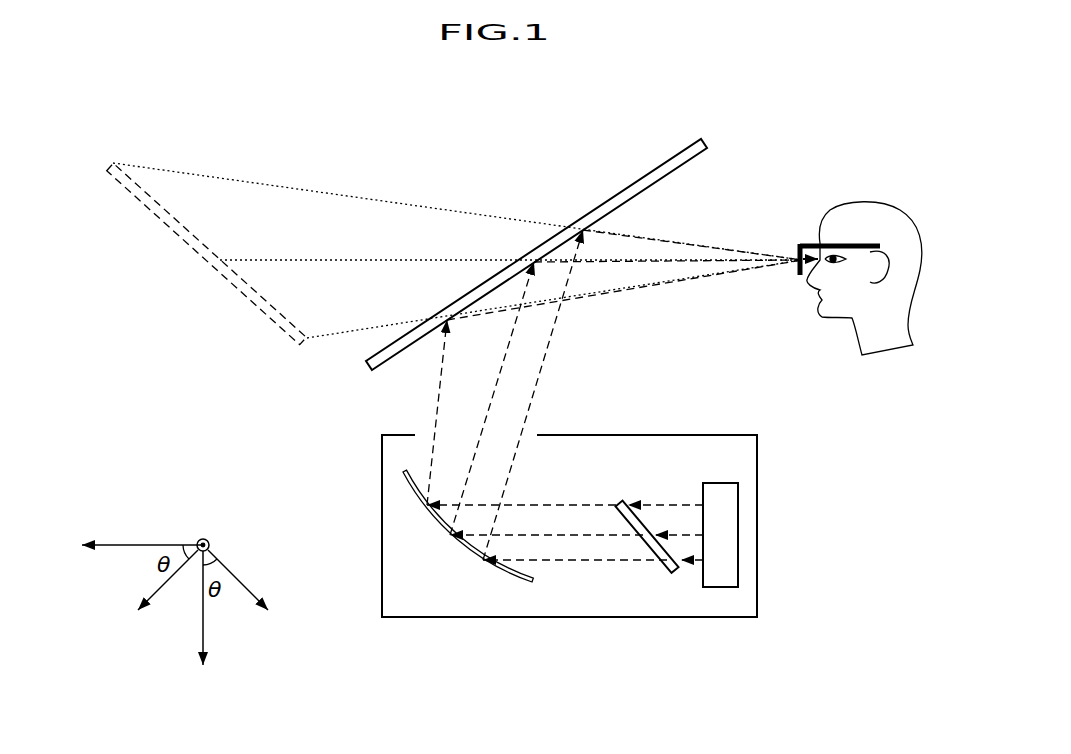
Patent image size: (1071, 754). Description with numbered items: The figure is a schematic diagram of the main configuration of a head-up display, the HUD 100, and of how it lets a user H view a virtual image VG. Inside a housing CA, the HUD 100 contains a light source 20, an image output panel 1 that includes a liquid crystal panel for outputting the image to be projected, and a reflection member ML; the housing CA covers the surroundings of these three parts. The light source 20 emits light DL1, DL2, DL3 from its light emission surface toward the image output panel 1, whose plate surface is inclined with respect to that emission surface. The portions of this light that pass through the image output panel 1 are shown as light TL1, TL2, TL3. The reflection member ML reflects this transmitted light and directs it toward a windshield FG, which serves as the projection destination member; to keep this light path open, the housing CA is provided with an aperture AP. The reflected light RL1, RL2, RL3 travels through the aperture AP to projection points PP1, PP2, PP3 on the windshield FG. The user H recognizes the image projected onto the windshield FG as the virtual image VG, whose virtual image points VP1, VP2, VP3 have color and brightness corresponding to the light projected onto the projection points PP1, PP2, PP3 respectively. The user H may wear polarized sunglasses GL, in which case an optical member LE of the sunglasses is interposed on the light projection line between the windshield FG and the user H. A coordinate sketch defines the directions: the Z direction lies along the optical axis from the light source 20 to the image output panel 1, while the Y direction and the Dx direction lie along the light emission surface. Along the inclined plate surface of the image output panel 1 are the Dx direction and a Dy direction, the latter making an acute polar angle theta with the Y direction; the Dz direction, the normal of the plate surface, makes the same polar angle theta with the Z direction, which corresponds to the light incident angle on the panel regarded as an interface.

The virtual image VG is at (142, 205).
The virtual image point VP1 is at (308, 336).
The virtual image point VP2 is at (220, 258).
The virtual image point VP3 is at (113, 162).
The windshield FG is at (640, 178).
The projection point PP1 is at (445, 316).
The projection point PP2 is at (530, 259).
The projection point PP3 is at (580, 226).
The light RL1 is at (437, 402).
The light RL2 is at (513, 332).
The light RL3 is at (540, 368).
The user H is at (920, 218).
The optical member LE is at (800, 247).
The polarized sunglasses GL is at (805, 244).
The HUD 100 is at (604, 492).
The housing CA is at (757, 478).
The aperture AP is at (528, 437).
The reflection member ML is at (465, 560).
The light source 20 is at (737, 530).
The image output panel 1 is at (665, 572).
The light DL1 is at (658, 505).
The light DL2 is at (677, 535).
The light DL3 is at (685, 563).
The light TL1 is at (552, 505).
The light TL2 is at (600, 535).
The light TL3 is at (590, 565).
The Z direction Z is at (130, 548).
The Y direction Y is at (201, 624).
The Dx direction Dx is at (228, 524).
The Dy direction Dy is at (252, 595).
The Dz direction Dz is at (155, 595).